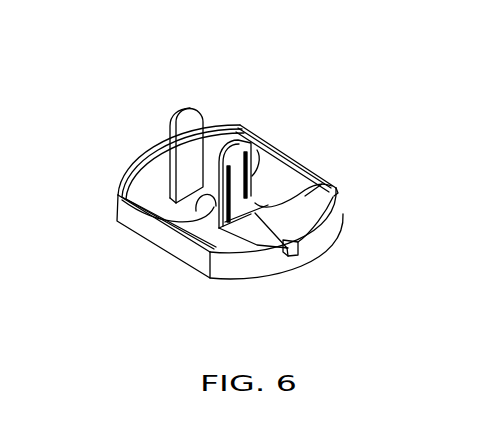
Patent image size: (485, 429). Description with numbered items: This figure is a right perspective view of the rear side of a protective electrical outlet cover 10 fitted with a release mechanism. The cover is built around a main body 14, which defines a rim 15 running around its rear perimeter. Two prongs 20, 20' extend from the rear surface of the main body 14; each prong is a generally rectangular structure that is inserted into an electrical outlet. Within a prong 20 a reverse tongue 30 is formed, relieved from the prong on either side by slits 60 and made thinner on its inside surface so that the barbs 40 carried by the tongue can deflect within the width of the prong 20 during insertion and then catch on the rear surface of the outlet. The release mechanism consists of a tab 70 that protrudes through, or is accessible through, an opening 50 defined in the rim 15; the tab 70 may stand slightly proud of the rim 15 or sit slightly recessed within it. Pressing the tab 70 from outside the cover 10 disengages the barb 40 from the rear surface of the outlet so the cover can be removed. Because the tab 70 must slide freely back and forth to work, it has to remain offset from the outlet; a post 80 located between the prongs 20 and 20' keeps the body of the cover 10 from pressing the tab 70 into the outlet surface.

The protective cover 10 is at (362, 125).
The main body 14 is at (323, 182).
The rim 15 is at (321, 229).
The prong 20 is at (264, 146).
The prong 20' is at (216, 124).
The reverse tongue 30 is at (293, 212).
The barb 40 is at (268, 186).
The opening 50 is at (292, 262).
The slit 60 is at (186, 165).
The tab 70 is at (222, 238).
The post 80 is at (117, 205).